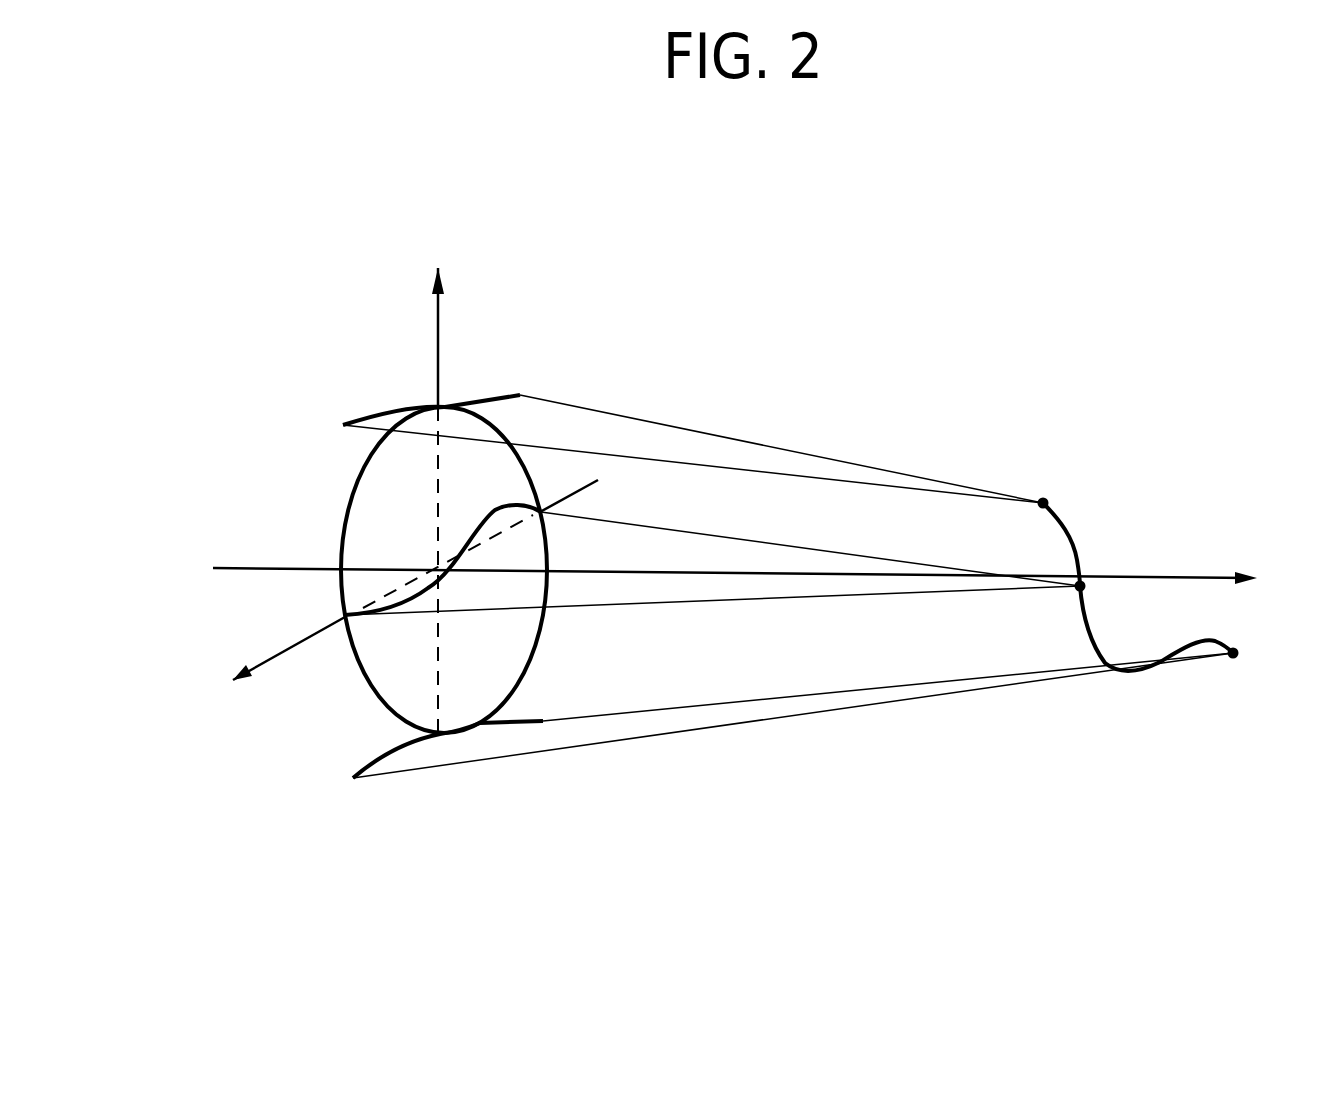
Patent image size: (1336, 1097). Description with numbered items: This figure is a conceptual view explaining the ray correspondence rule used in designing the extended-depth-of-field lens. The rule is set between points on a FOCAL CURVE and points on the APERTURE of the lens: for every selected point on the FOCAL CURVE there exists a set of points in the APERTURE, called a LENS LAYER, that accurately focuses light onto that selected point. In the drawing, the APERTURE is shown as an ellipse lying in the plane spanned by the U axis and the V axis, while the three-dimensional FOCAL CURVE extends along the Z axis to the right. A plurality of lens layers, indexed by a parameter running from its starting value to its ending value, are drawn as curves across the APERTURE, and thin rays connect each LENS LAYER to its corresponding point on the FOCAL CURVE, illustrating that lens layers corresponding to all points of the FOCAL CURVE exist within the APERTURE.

The aperture APERTURE is at (438, 733).
The lens layer LENS LAYER is at (403, 598).
The focal curve FOCAL CURVE is at (1073, 537).
The U axis U is at (423, 500).
The V axis V is at (415, 602).
The Z axis Z is at (735, 558).